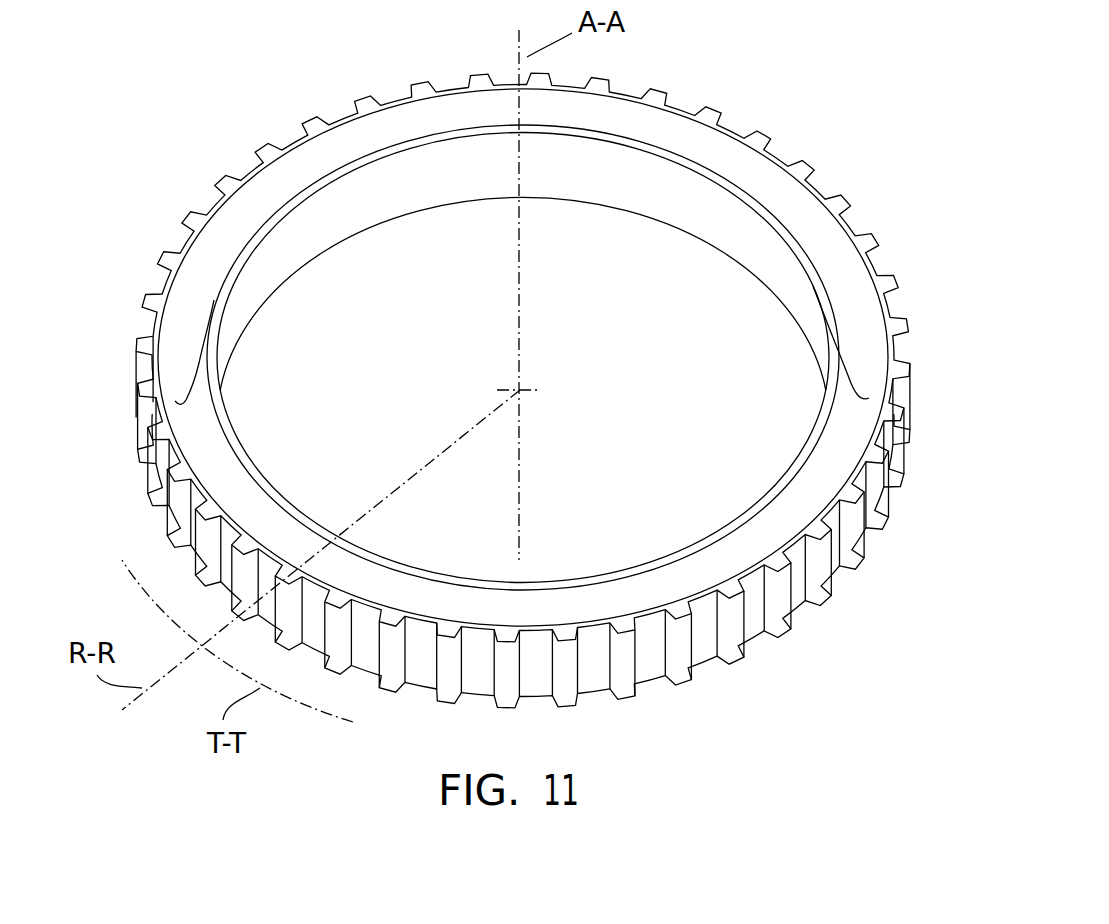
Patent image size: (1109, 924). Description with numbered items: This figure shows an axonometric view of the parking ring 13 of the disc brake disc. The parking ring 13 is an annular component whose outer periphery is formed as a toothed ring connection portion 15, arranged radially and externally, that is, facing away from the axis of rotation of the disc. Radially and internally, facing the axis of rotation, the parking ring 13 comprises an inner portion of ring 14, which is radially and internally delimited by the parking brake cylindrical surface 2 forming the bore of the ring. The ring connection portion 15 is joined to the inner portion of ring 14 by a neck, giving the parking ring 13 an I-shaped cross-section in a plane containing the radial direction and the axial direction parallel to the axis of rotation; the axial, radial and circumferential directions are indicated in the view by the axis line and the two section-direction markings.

The parking brake cylindrical surface 2 is at (656, 180).
The parking ring 13 is at (758, 111).
The inner portion of ring 14 is at (812, 286).
The ring connection portion 15 is at (841, 200).